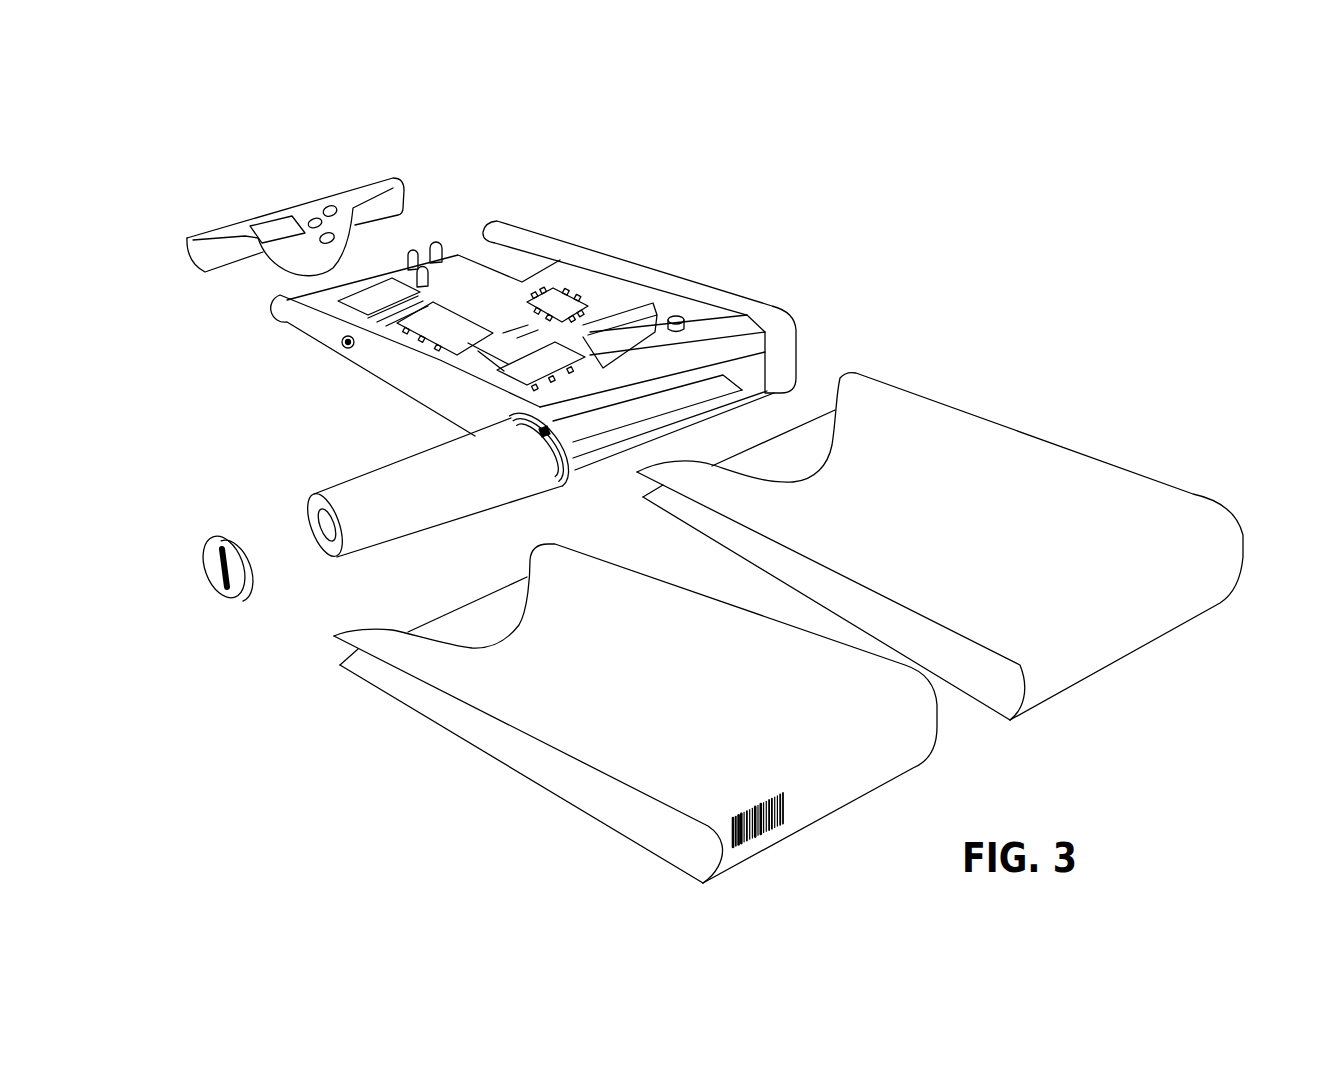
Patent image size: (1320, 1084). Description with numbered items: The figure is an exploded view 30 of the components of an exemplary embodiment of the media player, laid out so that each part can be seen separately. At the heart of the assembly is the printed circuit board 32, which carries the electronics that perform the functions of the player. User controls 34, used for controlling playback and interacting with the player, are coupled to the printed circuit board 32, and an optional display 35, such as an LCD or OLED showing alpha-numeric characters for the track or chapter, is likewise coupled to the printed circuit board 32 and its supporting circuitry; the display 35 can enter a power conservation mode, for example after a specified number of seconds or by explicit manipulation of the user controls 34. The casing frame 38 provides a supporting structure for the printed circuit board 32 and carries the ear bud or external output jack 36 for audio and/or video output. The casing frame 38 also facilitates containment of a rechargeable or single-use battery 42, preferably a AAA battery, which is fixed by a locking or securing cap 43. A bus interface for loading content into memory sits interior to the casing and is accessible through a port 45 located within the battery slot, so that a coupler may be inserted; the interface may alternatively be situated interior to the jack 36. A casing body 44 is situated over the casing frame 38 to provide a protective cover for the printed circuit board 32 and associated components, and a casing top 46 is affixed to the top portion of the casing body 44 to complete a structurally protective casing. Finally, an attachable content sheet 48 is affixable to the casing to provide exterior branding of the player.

The exploded view 30 is at (1082, 241).
The printed circuit board 32 is at (570, 334).
The user controls 34 is at (438, 240).
The display 35 is at (383, 296).
The external output jack 36 is at (338, 352).
The casing frame 38 is at (755, 292).
The battery 42 is at (365, 474).
The securing cap 43 is at (226, 600).
The casing body 44 is at (1051, 441).
The port 45 is at (548, 484).
The casing top 46 is at (203, 272).
The attachable content sheet 48 is at (544, 779).